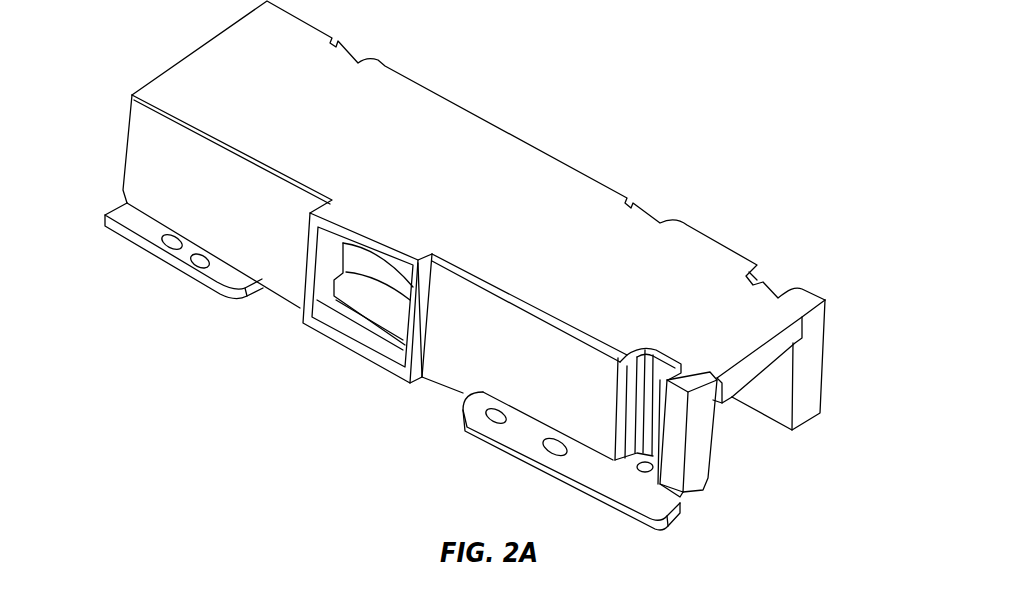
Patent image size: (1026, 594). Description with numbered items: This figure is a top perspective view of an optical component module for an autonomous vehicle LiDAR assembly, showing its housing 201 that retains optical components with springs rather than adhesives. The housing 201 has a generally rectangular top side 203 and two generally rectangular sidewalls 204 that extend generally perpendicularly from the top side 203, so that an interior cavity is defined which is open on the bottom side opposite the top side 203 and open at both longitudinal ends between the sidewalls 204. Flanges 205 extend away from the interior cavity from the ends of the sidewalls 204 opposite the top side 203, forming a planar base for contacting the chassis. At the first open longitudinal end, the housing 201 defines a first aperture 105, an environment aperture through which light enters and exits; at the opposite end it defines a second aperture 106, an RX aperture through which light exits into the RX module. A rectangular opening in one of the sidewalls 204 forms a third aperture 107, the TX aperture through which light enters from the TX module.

The first aperture 105 is at (467, 279).
The second aperture 106 is at (778, 468).
The third aperture 107 is at (350, 325).
The housing 201 is at (716, 240).
The top side 203 is at (478, 195).
The sidewalls 204 is at (462, 353).
The flanges 205 is at (218, 275).